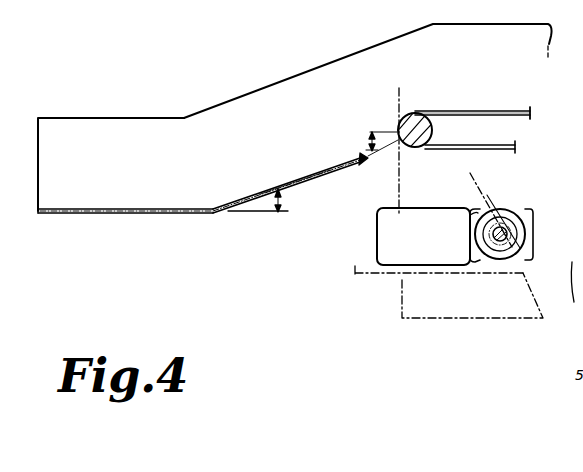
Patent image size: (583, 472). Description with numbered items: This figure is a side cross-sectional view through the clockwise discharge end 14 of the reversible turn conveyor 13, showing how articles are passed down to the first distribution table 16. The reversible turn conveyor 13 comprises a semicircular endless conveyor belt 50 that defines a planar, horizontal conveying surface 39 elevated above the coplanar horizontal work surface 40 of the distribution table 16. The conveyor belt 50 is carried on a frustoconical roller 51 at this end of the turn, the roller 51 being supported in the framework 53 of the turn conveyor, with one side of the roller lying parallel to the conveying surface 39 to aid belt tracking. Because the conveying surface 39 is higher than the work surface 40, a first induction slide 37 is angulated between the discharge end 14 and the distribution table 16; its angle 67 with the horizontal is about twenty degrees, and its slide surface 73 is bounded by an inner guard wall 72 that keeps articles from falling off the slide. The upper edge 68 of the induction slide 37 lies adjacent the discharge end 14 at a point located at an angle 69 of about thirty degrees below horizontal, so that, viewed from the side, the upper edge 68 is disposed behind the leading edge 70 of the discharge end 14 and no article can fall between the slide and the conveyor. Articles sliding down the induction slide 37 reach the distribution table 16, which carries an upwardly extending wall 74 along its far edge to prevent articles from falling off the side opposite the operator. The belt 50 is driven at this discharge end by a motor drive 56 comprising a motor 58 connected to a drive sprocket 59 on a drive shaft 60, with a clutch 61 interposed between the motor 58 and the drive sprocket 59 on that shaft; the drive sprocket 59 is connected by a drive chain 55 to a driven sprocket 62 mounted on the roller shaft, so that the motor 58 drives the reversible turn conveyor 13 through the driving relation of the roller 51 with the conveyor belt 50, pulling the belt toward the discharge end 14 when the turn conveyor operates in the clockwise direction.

The reversible turn conveyor 13 is at (522, 97).
The clockwise discharge end 14 is at (424, 108).
The first distribution table 16 is at (85, 218).
The first induction slide 37 is at (318, 175).
The conveying surface 39 is at (486, 108).
The work surface 40 is at (142, 208).
The endless conveyor belt 50 is at (472, 119).
The roller 51 is at (430, 150).
The framework 53 is at (398, 280).
The drive chain 55 is at (480, 188).
The motor drive 56 is at (364, 244).
The motor 58 is at (451, 239).
The drive sprocket 59 is at (534, 232).
The drive shaft 60 is at (520, 253).
The clutch 61 is at (518, 238).
The driven sprocket 62 is at (566, 288).
The angle of the induction slide 67 is at (290, 210).
The upper edge of the induction slide 68 is at (395, 162).
The angle below horizontal 69 is at (367, 138).
The leading edge 70 is at (405, 140).
The inner guard wall 72 is at (325, 74).
The slide surface 73 is at (288, 177).
The upwardly extending wall 74 is at (112, 138).